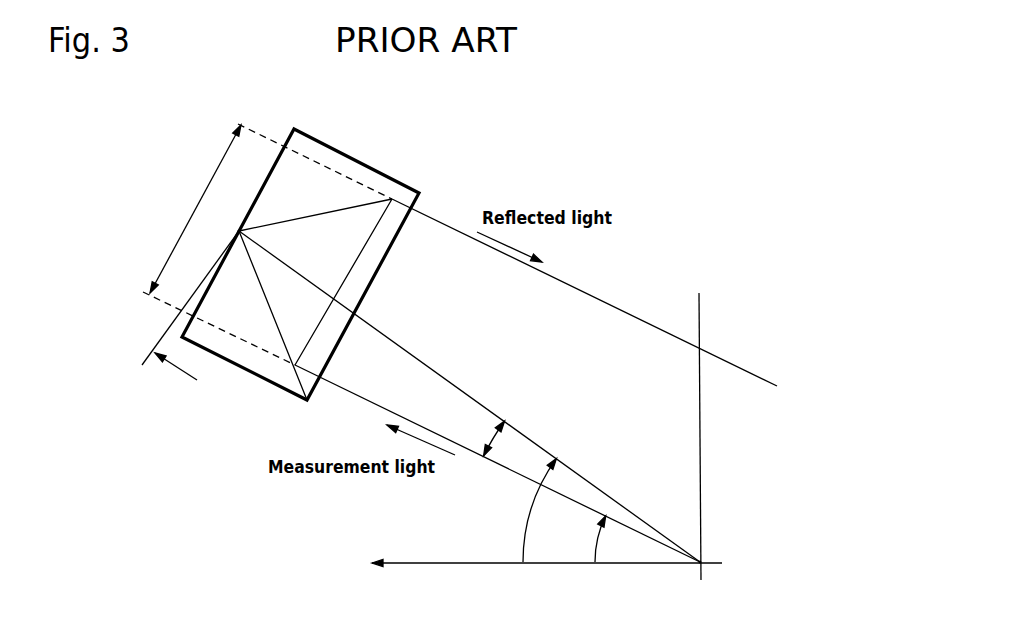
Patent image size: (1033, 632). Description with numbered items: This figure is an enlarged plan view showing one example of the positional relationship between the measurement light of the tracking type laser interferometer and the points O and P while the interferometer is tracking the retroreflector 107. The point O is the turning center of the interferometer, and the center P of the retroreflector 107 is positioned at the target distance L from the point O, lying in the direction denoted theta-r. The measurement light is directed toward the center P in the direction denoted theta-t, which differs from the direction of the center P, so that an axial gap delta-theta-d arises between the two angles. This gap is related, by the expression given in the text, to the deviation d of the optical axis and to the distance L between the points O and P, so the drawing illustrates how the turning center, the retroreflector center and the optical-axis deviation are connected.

The retroreflector 107 is at (370, 165).
The center of the retroreflector P is at (267, 299).
The point O is at (548, 436).
The deviation of the optical axis d is at (195, 209).
The distance between the points O and P L is at (178, 366).